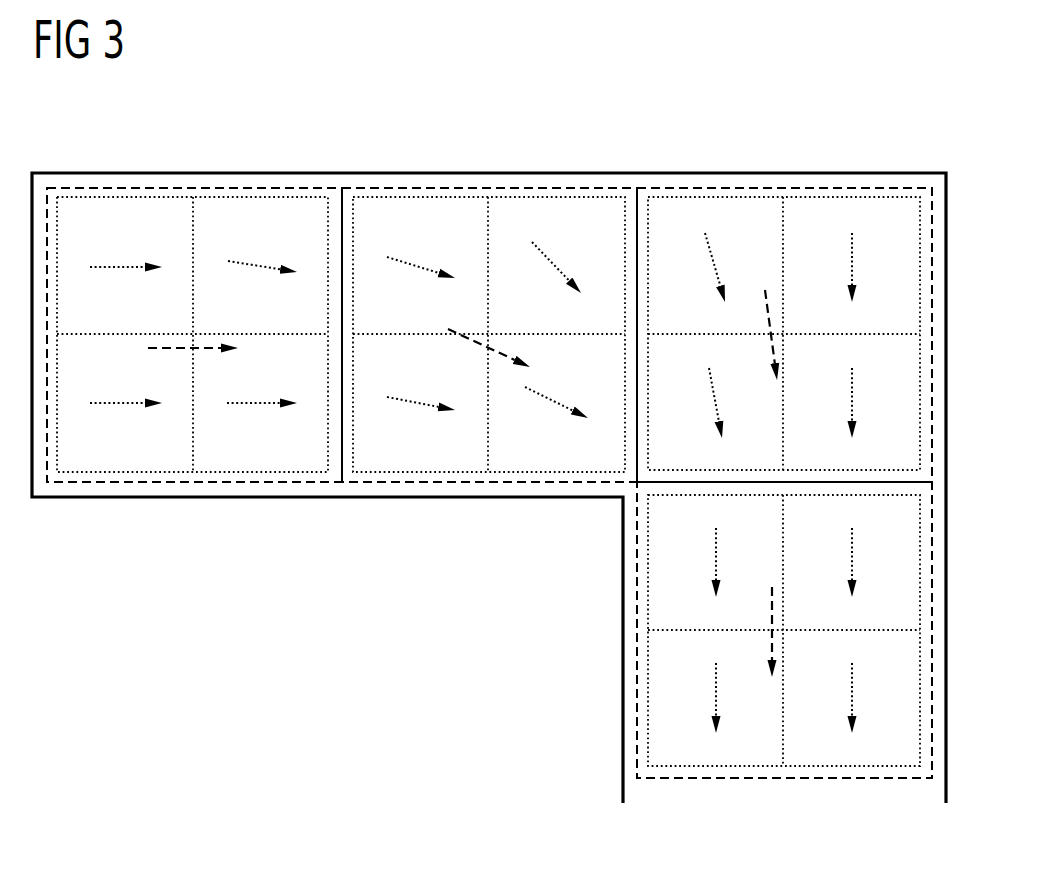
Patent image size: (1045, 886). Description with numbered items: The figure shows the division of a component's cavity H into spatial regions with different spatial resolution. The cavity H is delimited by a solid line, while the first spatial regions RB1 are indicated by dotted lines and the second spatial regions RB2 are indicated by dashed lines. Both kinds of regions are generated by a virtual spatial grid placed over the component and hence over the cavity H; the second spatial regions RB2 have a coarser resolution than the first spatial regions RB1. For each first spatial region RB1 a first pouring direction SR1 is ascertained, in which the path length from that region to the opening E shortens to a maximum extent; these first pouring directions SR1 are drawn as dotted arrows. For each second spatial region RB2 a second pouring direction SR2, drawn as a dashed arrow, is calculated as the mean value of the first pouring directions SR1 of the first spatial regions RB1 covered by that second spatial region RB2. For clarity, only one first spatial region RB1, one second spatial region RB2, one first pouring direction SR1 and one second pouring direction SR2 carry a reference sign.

The cavity H is at (193, 173).
The first spatial region RB1 is at (122, 197).
The second spatial region RB2 is at (247, 188).
The first pouring direction SR1 is at (107, 403).
The second pouring direction SR2 is at (173, 348).
The opening E is at (784, 659).